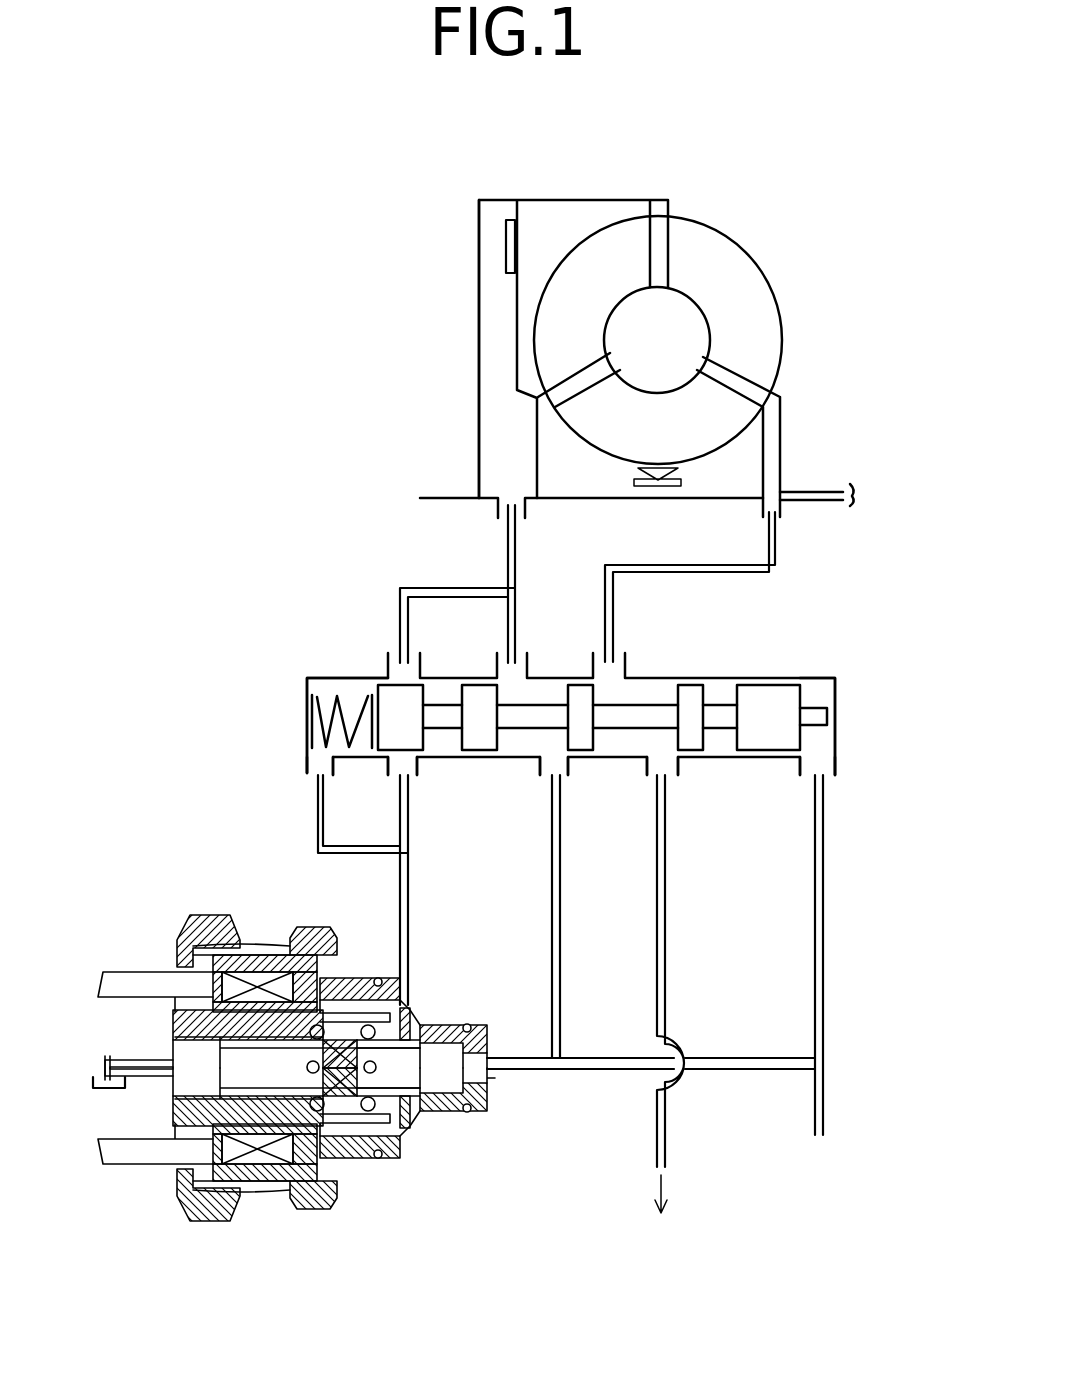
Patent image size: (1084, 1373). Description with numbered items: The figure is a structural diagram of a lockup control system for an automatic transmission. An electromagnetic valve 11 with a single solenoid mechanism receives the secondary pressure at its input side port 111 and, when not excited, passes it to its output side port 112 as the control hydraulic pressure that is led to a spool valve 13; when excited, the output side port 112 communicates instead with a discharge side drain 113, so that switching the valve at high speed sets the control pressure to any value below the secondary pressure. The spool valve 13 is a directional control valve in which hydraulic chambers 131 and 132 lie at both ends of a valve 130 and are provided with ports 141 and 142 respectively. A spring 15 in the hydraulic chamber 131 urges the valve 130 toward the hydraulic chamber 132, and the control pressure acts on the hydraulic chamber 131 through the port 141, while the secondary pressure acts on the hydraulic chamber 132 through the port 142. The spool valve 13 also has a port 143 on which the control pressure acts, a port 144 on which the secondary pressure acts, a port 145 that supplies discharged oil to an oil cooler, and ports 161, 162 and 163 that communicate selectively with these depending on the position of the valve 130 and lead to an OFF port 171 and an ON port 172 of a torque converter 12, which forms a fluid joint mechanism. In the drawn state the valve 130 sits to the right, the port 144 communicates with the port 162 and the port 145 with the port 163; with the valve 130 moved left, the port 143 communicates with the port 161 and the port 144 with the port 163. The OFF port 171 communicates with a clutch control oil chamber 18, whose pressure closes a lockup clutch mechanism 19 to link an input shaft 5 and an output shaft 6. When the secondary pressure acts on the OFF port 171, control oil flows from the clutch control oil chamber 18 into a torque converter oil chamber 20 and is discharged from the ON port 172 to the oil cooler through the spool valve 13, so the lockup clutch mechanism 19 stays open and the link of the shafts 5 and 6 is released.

The input shaft 5 is at (433, 490).
The output shaft 6 is at (852, 490).
The electromagnetic valve 11 is at (353, 1162).
The torque converter 12 is at (698, 220).
The spool valve 13 is at (557, 732).
The spring 15 is at (307, 722).
The clutch control oil chamber 18 is at (492, 308).
The lockup clutch mechanism 19 is at (507, 247).
The torque converter oil chamber 20 is at (548, 215).
The input side port 111 is at (495, 1070).
The output side port 112 is at (410, 958).
The discharge side drain 113 is at (98, 1060).
The valve 130 is at (770, 745).
The hydraulic chamber 131 is at (325, 677).
The hydraulic chamber 132 is at (820, 693).
The port 141 is at (307, 773).
The port 142 is at (838, 753).
The port 143 is at (420, 775).
The port 144 is at (568, 775).
The port 145 is at (678, 775).
The port 161 is at (421, 656).
The port 162 is at (528, 655).
The port 163 is at (628, 656).
The OFF port 171 is at (503, 522).
The ON port 172 is at (782, 520).